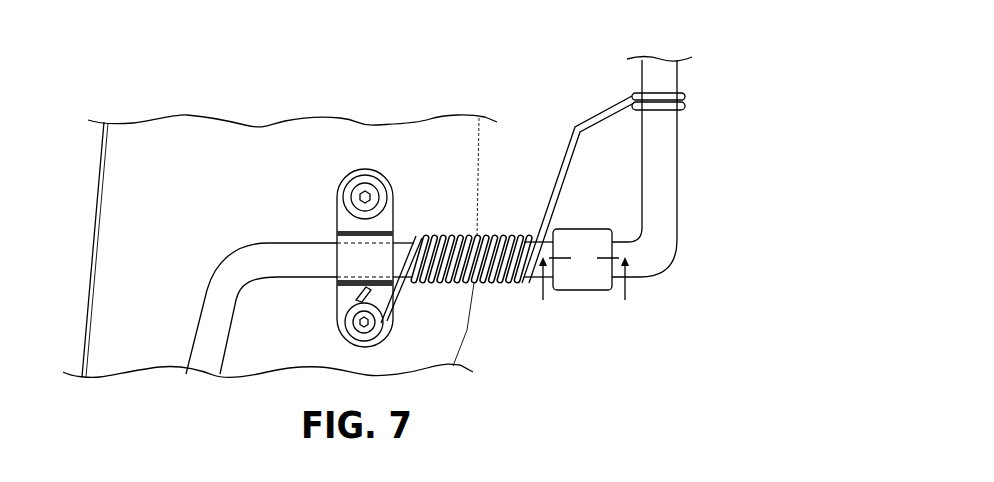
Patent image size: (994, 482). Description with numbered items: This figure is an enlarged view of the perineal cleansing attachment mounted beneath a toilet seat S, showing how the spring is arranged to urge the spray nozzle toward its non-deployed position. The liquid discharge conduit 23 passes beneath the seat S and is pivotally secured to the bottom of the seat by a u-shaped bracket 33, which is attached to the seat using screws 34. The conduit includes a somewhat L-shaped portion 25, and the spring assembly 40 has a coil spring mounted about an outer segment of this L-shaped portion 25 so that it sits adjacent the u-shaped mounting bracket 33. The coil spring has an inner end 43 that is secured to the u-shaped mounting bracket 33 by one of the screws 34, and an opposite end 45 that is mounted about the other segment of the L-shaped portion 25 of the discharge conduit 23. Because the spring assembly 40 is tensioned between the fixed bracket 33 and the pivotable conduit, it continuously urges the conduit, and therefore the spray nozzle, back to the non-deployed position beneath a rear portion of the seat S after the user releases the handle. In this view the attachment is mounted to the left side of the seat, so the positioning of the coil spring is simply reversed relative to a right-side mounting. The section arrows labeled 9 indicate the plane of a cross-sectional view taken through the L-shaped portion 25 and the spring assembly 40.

The toilet seat S is at (361, 127).
The liquid discharge conduit 23 is at (179, 331).
The u-shaped bracket 33 is at (392, 215).
The screws 34 is at (344, 197).
The inner end of spring 43 is at (398, 296).
The spring assembly 40 is at (552, 183).
The opposite end of spring 45 is at (604, 110).
The L-shaped portion 25 is at (661, 257).
The section line 9- 9 is at (584, 294).